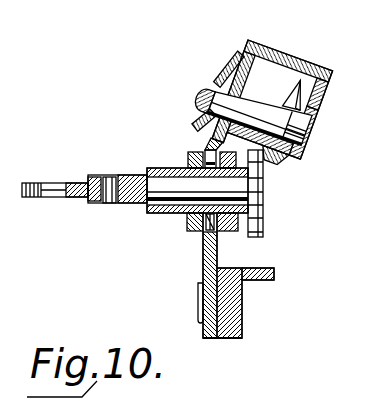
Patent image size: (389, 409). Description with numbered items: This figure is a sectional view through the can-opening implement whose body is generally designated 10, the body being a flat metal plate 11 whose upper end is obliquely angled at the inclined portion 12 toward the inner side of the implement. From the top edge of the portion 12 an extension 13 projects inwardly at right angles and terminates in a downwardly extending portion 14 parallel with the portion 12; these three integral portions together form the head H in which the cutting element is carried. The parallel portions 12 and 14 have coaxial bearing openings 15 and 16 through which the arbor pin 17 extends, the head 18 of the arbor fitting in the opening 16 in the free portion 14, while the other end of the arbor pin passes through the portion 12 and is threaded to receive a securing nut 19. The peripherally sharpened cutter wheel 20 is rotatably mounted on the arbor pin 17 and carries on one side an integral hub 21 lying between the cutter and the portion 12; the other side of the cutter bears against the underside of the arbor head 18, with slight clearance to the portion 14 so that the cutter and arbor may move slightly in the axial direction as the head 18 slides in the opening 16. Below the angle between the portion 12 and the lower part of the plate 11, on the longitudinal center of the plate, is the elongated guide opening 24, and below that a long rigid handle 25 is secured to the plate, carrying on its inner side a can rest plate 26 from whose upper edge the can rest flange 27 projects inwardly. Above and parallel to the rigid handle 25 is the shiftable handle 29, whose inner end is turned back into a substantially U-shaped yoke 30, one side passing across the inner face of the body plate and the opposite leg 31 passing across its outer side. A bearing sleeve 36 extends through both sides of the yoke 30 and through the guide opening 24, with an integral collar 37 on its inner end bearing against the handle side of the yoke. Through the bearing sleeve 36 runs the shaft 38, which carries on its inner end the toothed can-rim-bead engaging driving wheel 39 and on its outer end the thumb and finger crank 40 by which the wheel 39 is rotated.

The head H is at (296, 52).
The body of the implement 10 is at (203, 325).
The flat metal plate 11 is at (201, 270).
The inclined portion 12 is at (242, 50).
The extension 13 is at (268, 43).
The downwardly extending portion 14 is at (325, 78).
The bearing opening 15 is at (200, 113).
The bearing opening 16 is at (328, 102).
The arbor pin 17 is at (220, 70).
The head of the arbor 18 is at (302, 125).
The securing nut 19 is at (190, 100).
The cutter wheel 20 is at (266, 152).
The hub 21 is at (266, 92).
The guide opening 24 is at (210, 225).
The rigid handle 25 is at (220, 340).
The can rest plate 26 is at (242, 318).
The can rest flange 27 is at (274, 276).
The shiftable handle 29 is at (232, 232).
The yoke 30 is at (180, 228).
The leg 31 is at (185, 221).
The bearing sleeve 36 is at (150, 213).
The collar 37 is at (240, 222).
The shaft 38 is at (128, 175).
The driving wheel 39 is at (257, 200).
The thumb and finger crank 40 is at (40, 198).